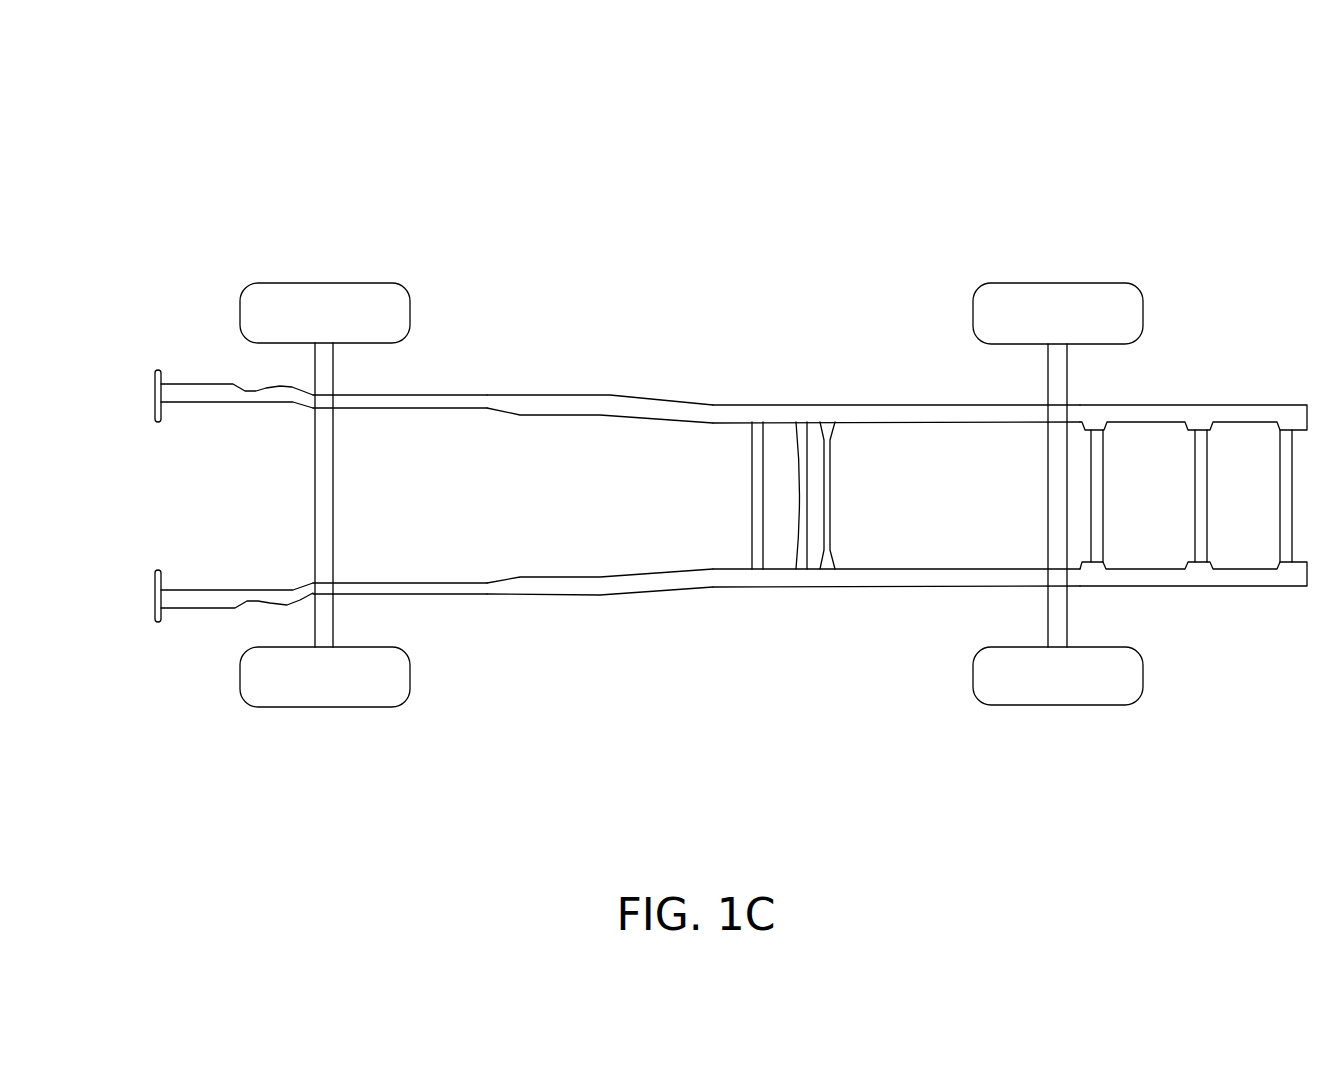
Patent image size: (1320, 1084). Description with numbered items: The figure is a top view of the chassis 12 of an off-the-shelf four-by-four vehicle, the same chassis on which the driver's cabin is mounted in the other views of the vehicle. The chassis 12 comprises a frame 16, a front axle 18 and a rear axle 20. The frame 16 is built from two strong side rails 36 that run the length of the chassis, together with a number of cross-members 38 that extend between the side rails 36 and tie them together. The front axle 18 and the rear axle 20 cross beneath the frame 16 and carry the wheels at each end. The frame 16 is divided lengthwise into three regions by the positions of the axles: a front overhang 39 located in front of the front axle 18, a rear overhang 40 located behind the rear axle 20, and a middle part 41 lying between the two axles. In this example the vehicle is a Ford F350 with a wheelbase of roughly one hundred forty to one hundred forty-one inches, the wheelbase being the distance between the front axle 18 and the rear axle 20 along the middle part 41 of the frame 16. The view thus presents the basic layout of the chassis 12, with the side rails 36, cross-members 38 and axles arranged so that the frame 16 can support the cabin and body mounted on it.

The chassis 12 is at (322, 208).
The frame 16 is at (663, 418).
The front axle 18 is at (315, 493).
The rear axle 20 is at (1057, 473).
The side rails 36 is at (485, 402).
The cross-members 38 is at (1288, 492).
The front overhang 39 is at (195, 598).
The rear overhang 40 is at (1202, 417).
The middle part 41 is at (857, 418).